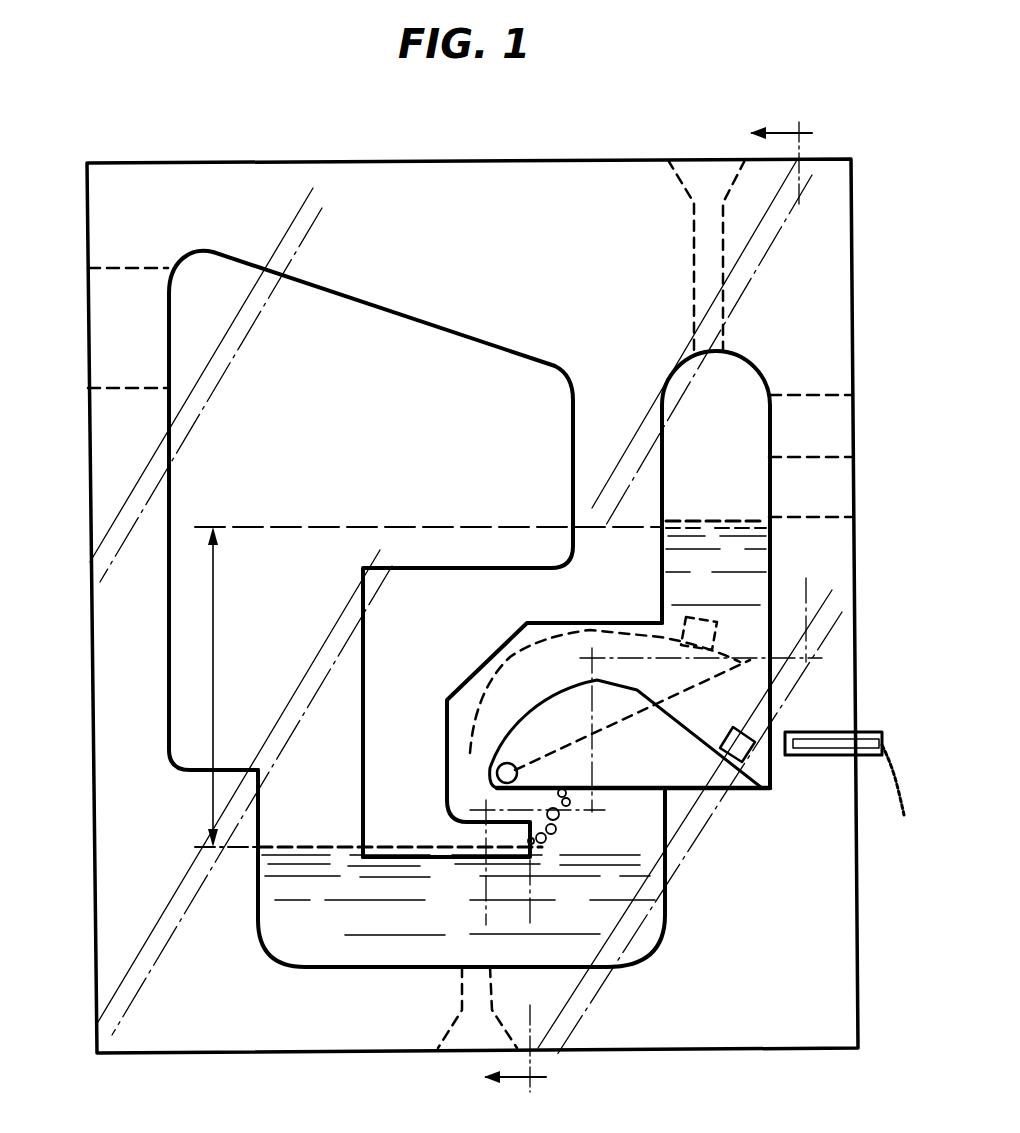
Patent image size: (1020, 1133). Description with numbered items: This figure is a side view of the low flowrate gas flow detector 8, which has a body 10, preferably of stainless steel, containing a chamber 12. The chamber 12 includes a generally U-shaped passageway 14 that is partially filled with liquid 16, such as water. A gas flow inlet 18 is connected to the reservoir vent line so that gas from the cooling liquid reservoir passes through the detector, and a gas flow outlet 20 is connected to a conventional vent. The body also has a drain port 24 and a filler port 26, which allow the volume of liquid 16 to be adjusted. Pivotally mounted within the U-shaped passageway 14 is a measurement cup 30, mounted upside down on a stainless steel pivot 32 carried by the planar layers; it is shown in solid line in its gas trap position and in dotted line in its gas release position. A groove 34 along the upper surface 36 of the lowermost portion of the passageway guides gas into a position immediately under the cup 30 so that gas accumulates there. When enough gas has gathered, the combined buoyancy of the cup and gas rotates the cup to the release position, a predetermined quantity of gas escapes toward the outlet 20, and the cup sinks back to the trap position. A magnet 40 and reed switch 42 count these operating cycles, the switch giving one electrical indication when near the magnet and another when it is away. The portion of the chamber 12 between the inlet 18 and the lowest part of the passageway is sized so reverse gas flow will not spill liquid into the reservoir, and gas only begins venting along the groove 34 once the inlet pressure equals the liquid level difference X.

The low flowrate gas flow detector 8 is at (582, 128).
The body 10 is at (236, 174).
The chamber 12 is at (398, 354).
The U-shaped passageway 14 is at (638, 906).
The liquid 16 is at (757, 560).
The gas flow inlet 18 is at (112, 349).
The gas flow outlet 20 is at (832, 416).
The drain port 24 is at (462, 1020).
The filler port 26 is at (694, 238).
The measurement cup 30 is at (678, 732).
The pivot 32 is at (514, 764).
The groove 34 is at (428, 840).
The upper surface 36 is at (515, 880).
The magnet 40 is at (746, 732).
The reed switch 42 is at (838, 732).